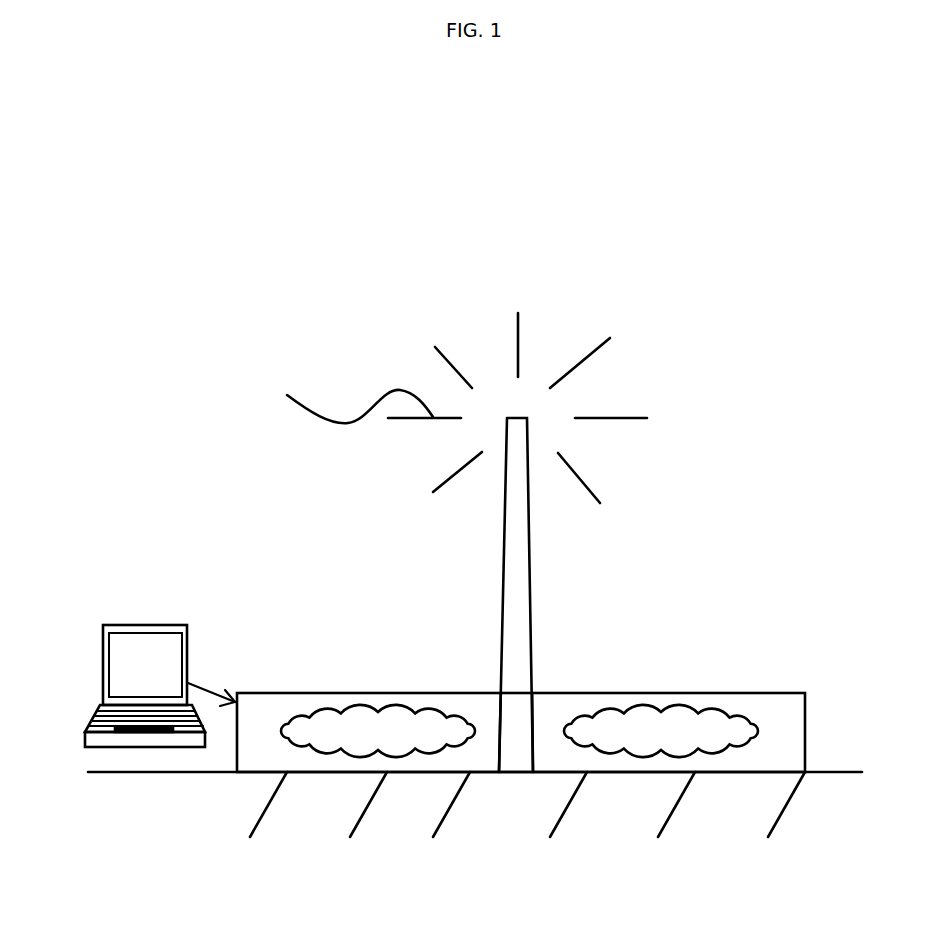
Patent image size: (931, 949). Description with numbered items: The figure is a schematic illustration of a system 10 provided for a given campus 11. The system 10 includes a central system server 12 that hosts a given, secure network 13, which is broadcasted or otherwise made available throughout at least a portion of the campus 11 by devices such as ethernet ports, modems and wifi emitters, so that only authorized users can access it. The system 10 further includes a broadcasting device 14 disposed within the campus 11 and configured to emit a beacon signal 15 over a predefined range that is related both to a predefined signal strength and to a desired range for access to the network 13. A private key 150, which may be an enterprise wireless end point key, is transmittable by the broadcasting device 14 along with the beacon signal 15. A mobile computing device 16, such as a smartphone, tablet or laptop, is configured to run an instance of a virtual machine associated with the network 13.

The system 10 is at (162, 820).
The campus 11 is at (482, 772).
The central system server 12 is at (518, 733).
The secure network 13 is at (337, 725).
The broadcasting device 14 is at (520, 543).
The beacon signal 15 is at (332, 398).
The private key 150 is at (360, 406).
The mobile computing device 16 is at (138, 623).